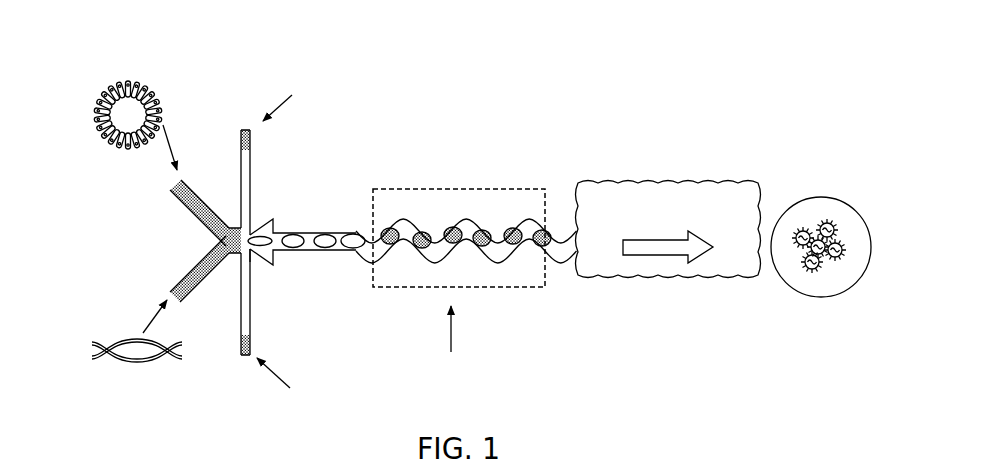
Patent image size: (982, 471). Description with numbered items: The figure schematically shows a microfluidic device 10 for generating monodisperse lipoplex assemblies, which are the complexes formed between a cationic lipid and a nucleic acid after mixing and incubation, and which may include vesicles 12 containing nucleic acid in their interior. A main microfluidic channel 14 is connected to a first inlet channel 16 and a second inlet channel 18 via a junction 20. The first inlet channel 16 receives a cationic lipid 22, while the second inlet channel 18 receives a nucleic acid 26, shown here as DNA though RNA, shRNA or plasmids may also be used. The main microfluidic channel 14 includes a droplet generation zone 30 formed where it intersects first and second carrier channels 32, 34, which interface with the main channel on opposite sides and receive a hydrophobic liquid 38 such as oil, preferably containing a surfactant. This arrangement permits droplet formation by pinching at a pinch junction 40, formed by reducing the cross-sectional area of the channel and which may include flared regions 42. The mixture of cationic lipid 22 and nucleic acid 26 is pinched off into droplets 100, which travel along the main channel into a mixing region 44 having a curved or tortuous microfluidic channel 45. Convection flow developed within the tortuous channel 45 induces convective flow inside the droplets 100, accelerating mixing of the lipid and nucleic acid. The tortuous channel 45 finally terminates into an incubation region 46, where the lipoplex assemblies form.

The microfluidic device 10 is at (527, 60).
The vesicles 12 is at (827, 224).
The main microfluidic channel 14 is at (229, 228).
The first inlet channel 16 is at (186, 207).
The second inlet channel 18 is at (185, 276).
The junction 20 is at (217, 239).
The cationic lipid 22 is at (95, 118).
The nucleic acid 26 is at (120, 358).
The droplet generation zone 30 is at (259, 220).
The first carrier channel 32 is at (252, 156).
The second carrier channel 34 is at (251, 338).
The hydrophobic liquid 38 is at (243, 130).
The pinch junction 40 is at (252, 264).
The flared regions 42 is at (290, 213).
The mixing region 44 is at (533, 189).
The tortuous microfluidic channel 45 is at (466, 218).
The incubation region 46 is at (667, 183).
The droplets 100 is at (352, 233).